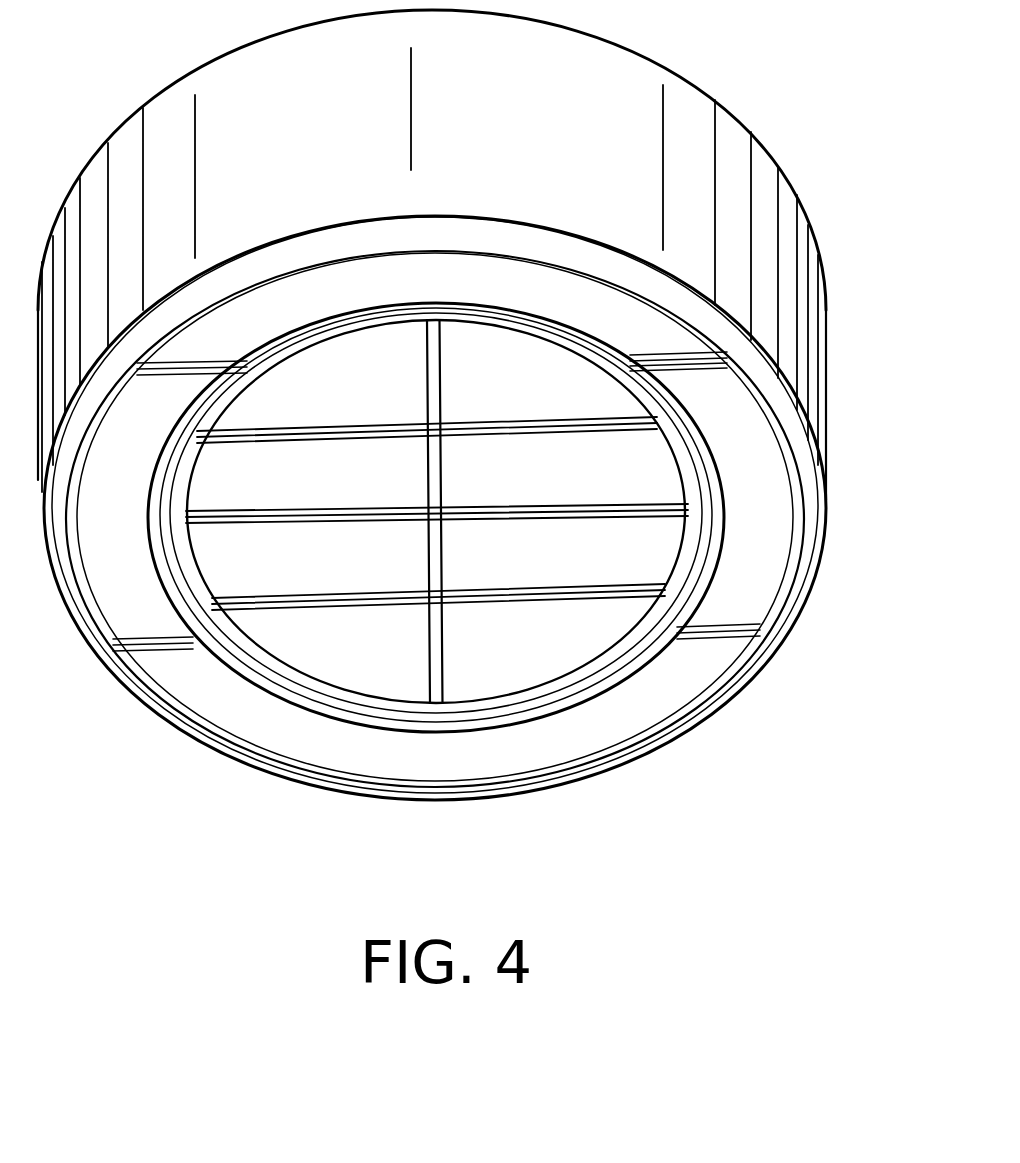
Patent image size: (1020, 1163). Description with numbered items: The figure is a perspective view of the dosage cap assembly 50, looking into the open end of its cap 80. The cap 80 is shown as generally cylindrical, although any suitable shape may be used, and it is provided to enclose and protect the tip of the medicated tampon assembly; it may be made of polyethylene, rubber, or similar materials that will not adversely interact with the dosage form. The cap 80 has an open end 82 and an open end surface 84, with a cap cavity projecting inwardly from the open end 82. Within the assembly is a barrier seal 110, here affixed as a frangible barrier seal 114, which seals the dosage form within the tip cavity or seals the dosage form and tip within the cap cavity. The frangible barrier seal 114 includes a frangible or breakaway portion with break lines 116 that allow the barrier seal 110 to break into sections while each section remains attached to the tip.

The dosage cap assembly 50 is at (476, 425).
The cap 80 is at (828, 345).
The open end 82 is at (207, 702).
The open end surface 84 is at (776, 560).
The barrier seal 110 is at (598, 562).
The frangible barrier seal 114 is at (340, 562).
The break lines 116 is at (204, 530).